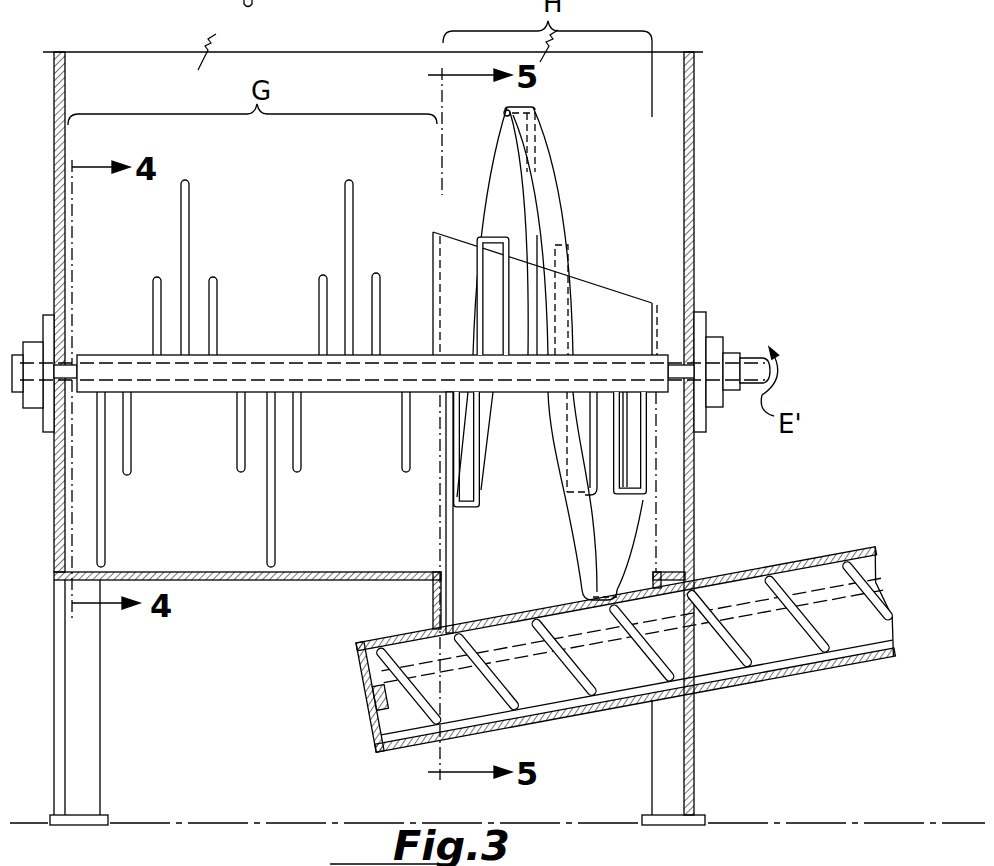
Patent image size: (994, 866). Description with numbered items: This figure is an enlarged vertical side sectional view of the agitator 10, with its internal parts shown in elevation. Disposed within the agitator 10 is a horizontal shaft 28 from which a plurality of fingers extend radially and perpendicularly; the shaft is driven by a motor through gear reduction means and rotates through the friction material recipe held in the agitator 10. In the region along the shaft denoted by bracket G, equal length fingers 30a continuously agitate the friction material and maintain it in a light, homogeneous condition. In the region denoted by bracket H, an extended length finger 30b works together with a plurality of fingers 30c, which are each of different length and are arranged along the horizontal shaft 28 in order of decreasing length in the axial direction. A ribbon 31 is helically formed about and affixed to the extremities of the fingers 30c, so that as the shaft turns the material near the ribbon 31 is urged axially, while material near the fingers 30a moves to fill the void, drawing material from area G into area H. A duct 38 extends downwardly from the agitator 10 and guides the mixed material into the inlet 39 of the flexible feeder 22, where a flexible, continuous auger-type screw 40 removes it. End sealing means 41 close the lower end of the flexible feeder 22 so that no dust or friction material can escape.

The agitator 10 is at (697, 145).
The flexible feeder 22 is at (828, 552).
The horizontal shaft 28 is at (181, 393).
The radially extending fingers 30a is at (152, 282).
The radially extending finger 30b is at (450, 560).
The radially extending fingers 30c is at (593, 443).
The ribbon 31 is at (552, 207).
The duct 38 is at (432, 602).
The inlet 39 is at (519, 618).
The flexible screw 40 is at (768, 628).
The end sealing means 41 is at (358, 678).